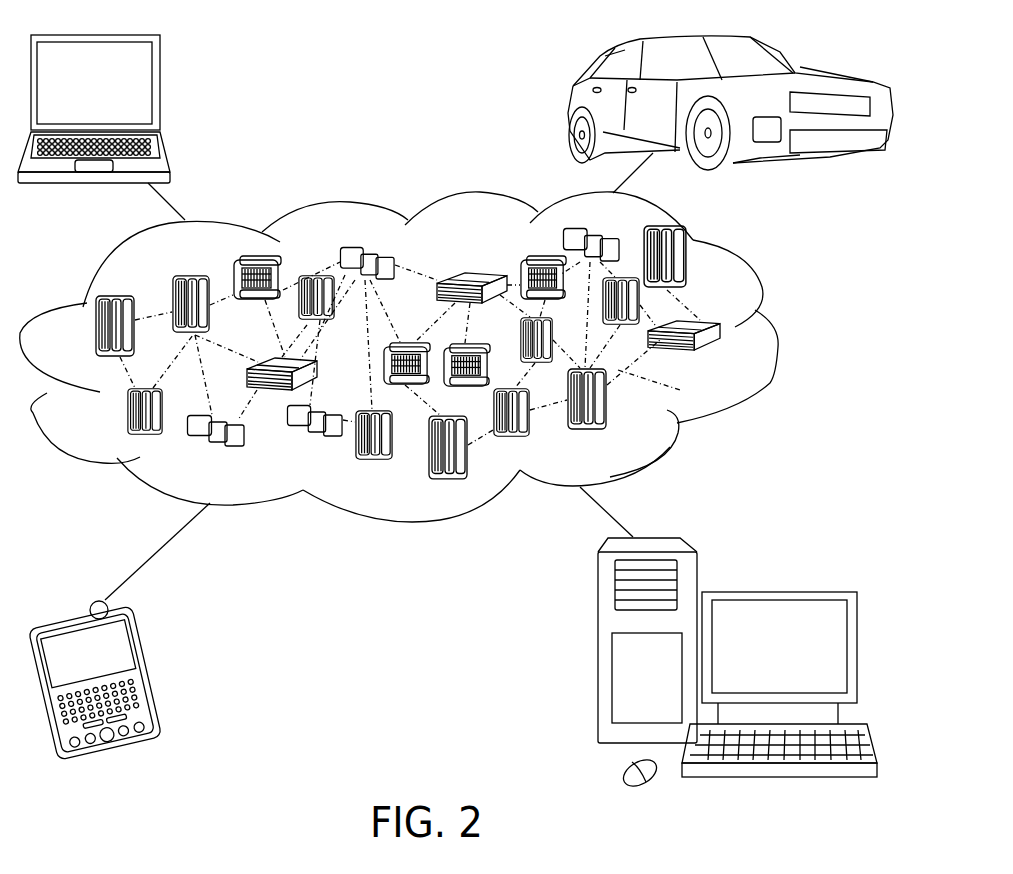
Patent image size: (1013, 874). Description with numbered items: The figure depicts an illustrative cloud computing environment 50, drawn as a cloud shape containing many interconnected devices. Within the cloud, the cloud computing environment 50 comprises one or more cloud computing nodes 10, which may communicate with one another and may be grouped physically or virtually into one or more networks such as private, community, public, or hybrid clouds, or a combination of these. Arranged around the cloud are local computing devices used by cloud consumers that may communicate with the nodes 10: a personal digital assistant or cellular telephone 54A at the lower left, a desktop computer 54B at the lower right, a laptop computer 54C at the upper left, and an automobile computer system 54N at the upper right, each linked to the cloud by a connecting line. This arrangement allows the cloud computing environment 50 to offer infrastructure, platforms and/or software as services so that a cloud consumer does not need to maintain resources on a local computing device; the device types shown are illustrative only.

The cloud computing node 10 is at (723, 360).
The cloud computing environment 50 is at (425, 357).
The personal digital assistant or cellular telephone 54A is at (150, 673).
The desktop computer 54B is at (772, 590).
The laptop computer 54C is at (160, 93).
The automobile computer system 54N is at (572, 107).